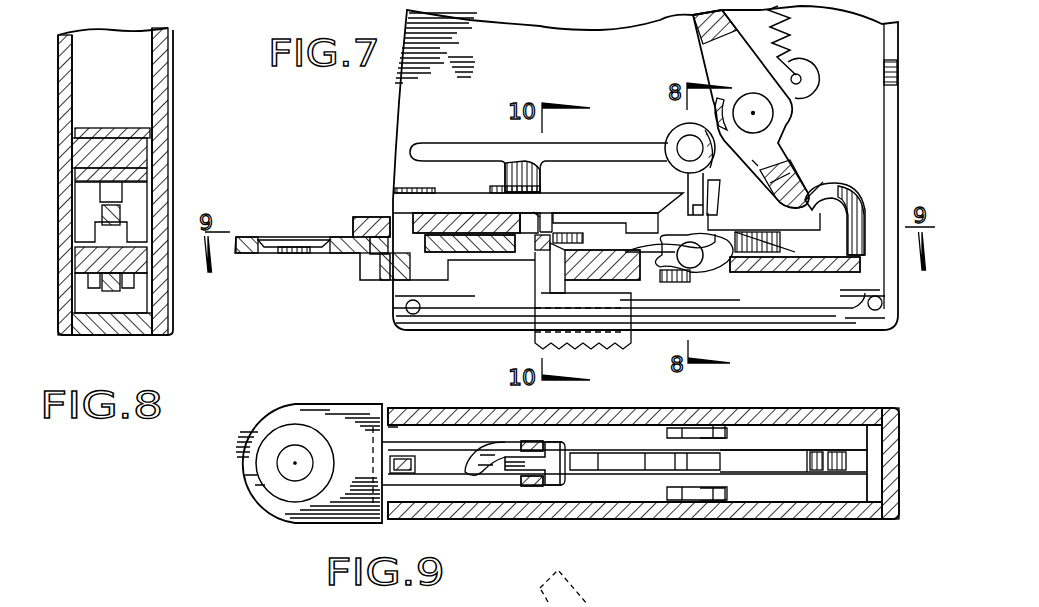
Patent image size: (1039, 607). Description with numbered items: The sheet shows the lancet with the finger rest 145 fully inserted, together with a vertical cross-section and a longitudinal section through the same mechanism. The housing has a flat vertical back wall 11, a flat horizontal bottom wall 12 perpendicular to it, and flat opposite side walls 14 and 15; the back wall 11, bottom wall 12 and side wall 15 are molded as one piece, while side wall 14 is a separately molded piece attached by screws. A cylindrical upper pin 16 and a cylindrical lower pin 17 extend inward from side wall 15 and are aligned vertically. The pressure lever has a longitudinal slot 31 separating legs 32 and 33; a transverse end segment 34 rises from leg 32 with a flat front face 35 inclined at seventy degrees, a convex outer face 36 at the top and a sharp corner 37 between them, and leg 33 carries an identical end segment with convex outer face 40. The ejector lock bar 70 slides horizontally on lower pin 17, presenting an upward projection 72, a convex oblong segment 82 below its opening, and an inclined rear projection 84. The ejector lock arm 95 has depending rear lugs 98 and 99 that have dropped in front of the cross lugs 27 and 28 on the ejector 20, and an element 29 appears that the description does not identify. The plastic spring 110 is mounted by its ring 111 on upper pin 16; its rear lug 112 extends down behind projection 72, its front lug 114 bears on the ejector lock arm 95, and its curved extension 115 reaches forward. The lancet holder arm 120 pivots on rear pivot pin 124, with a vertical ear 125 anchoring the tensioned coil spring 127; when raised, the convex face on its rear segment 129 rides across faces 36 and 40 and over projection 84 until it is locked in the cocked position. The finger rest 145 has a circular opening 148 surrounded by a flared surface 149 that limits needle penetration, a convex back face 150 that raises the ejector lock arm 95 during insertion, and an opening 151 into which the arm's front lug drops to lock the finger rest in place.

In FIG. 7, the back wall 11 is at (890, 110).
In FIG. 9, the back wall 11 is at (897, 473).
In FIG. 7, the bottom wall 12 is at (796, 325).
In FIG. 8, the bottom wall 12 is at (105, 330).
In FIG. 8, the side wall 14 is at (164, 82).
In FIG. 9, the side wall 14 is at (585, 518).
In FIG. 8, the side wall 15 is at (58, 108).
In FIG. 9, the side wall 15 is at (790, 407).
In FIG. 7, the upper pin 16 is at (687, 137).
In FIG. 8, the upper pin 16 is at (122, 129).
In FIG. 7, the lower pin 17 is at (693, 262).
In FIG. 8, the lower pin 17 is at (130, 260).
In FIG. 7, the ejector 20 is at (602, 335).
In FIG. 7, the cross lug 27 is at (540, 252).
In FIG. 9, the cross lug 27 is at (559, 482).
In FIG. 9, the cross lug 28 is at (555, 443).
In FIG. 7, the plunger stem 29 is at (508, 240).
In FIG. 9, the plunger stem 29 is at (515, 470).
In FIG. 7, the longitudinal slot 31 is at (810, 175).
In FIG. 9, the longitudinal slot 31 is at (830, 495).
In FIG. 7, the longitudinal leg 32 is at (795, 272).
In FIG. 9, the longitudinal leg 32 is at (812, 423).
In FIG. 9, the longitudinal leg 33 is at (730, 463).
In FIG. 9, the transverse end segment 34 is at (668, 488).
In FIG. 9, the flat front face 35 is at (673, 440).
In FIG. 9, the convex outer face 36 is at (687, 502).
In FIG. 9, the sharp corner 37 is at (705, 426).
In FIG. 7, the convex outer face 40 is at (842, 185).
In FIG. 7, the ejector lock bar 70 is at (655, 234).
In FIG. 7, the projection 72 is at (683, 241).
In FIG. 8, the convex oblong segment 82 is at (106, 287).
In FIG. 7, the projection 84 is at (823, 205).
In FIG. 7, the ejector lock arm 95 is at (603, 192).
In FIG. 7, the rear lug 98 is at (527, 232).
In FIG. 9, the rear lug 98 is at (533, 488).
In FIG. 9, the rear lug 99 is at (528, 440).
In FIG. 7, the plastic spring 110 is at (571, 152).
In FIG. 8, the ring 111 is at (97, 125).
In FIG. 7, the rear lug 112 is at (705, 172).
In FIG. 8, the rear lug 112 is at (110, 196).
In FIG. 7, the front lug 114 is at (531, 188).
In FIG. 7, the extension 115 is at (462, 137).
In FIG. 7, the lancet holder arm 120 is at (702, 37).
In FIG. 7, the rear pivot pin 124 is at (765, 114).
In FIG. 7, the vertical ear 125 is at (812, 78).
In FIG. 7, the coil spring 127 is at (792, 44).
In FIG. 7, the rear segment 129 is at (766, 182).
In FIG. 7, the finger rest 145 is at (345, 233).
In FIG. 9, the finger rest 145 is at (258, 421).
In FIG. 7, the circular opening 148 is at (298, 258).
In FIG. 9, the circular opening 148 is at (279, 467).
In FIG. 7, the flared surface 149 is at (267, 240).
In FIG. 9, the flared surface 149 is at (290, 435).
In FIG. 9, the convex back face 150 is at (500, 445).
In FIG. 9, the opening 151 is at (390, 461).